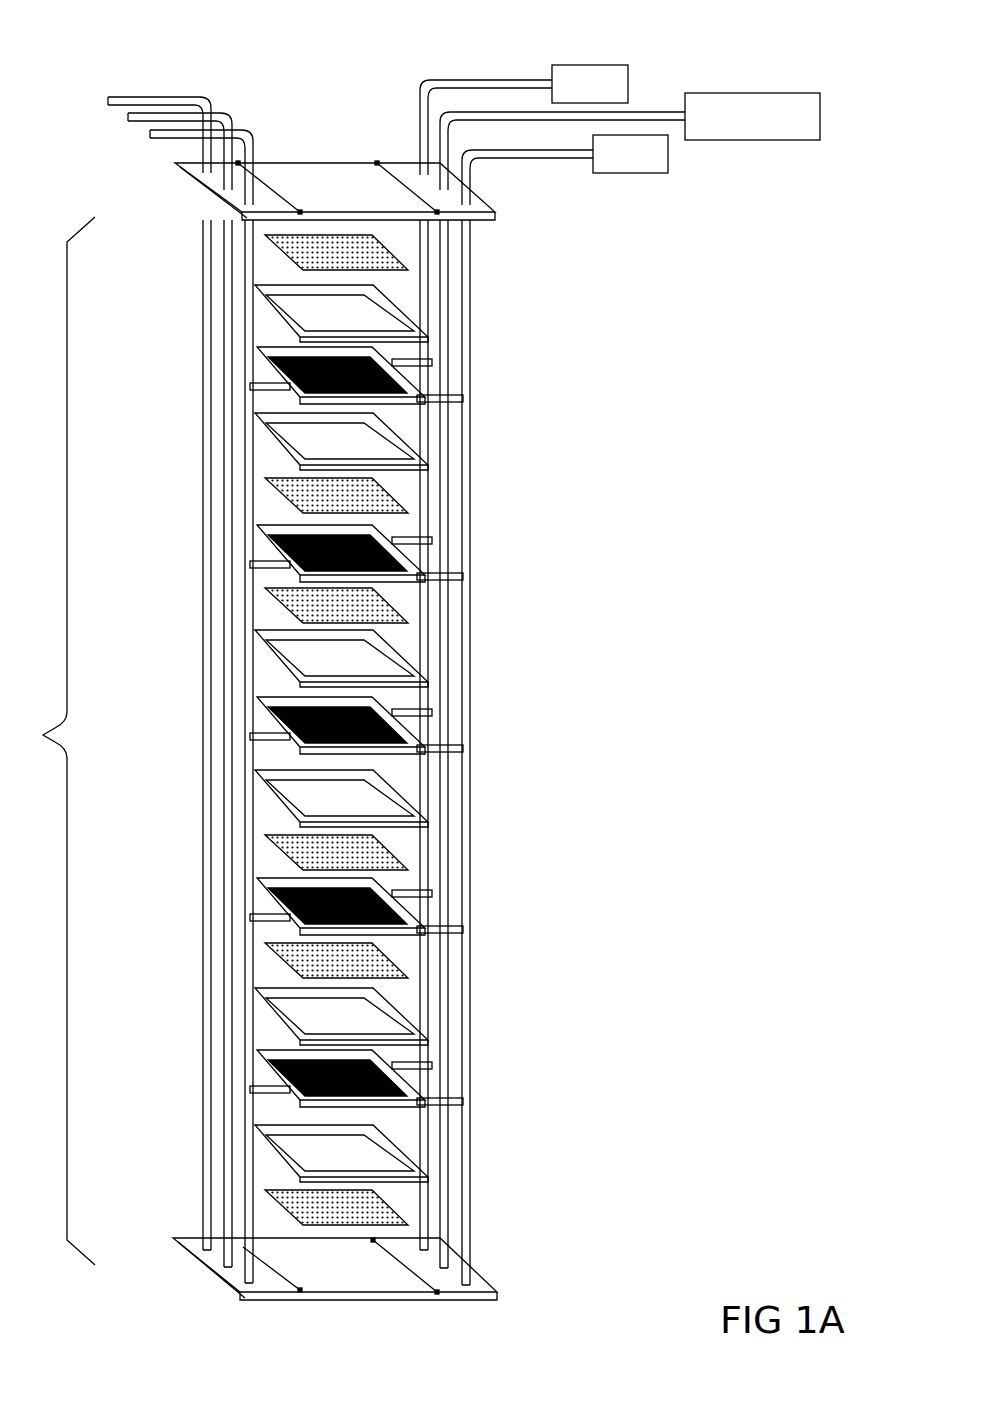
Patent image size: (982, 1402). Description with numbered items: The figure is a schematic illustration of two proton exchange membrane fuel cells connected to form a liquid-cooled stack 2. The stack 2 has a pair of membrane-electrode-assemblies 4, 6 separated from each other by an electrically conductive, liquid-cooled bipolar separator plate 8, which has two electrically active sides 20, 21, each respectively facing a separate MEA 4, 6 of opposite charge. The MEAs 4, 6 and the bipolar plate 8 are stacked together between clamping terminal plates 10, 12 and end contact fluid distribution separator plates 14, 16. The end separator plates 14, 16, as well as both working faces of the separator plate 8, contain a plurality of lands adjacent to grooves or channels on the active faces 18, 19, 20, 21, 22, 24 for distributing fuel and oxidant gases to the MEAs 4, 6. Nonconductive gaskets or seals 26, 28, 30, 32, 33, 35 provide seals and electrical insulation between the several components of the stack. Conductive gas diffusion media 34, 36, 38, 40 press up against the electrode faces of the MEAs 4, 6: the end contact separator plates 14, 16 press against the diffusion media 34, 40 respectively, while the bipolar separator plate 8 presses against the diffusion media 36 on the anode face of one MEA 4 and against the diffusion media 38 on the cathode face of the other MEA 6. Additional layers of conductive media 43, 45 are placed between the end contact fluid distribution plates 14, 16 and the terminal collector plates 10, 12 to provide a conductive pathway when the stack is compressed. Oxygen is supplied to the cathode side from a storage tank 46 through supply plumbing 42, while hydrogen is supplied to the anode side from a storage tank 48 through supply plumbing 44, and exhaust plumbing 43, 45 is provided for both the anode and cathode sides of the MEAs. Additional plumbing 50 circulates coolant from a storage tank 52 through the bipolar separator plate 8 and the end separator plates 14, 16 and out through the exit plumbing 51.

The stack 2 is at (56, 741).
The membrane-electrode-assembly 4 is at (262, 555).
The membrane-electrode-assembly 6 is at (422, 891).
The bipolar separator plate 8 is at (294, 737).
The clamping terminal plate 10 is at (363, 200).
The clamping terminal plate 12 is at (375, 1283).
The end contact fluid distribution separator plate 14 is at (340, 373).
The end contact fluid distribution separator plate 16 is at (342, 1115).
The active face 18 is at (418, 352).
The active face 19 is at (436, 415).
The active side 20 is at (266, 717).
The active side 21 is at (347, 801).
The active face 22 is at (300, 1139).
The active face 24 is at (424, 1078).
The gasket 26 is at (275, 440).
The gasket 28 is at (280, 655).
The gasket 30 is at (411, 812).
The gasket 32 is at (280, 1012).
The gasket 33 is at (395, 1142).
The gas diffusion media 34 is at (280, 490).
The gasket 35 is at (278, 305).
The gas diffusion media 36 is at (280, 603).
The gas diffusion media 38 is at (285, 843).
The gas diffusion media 40 is at (283, 955).
The supply plumbing 42 is at (422, 115).
The exhaust plumbing 43 is at (168, 97).
The supply plumbing 44 is at (465, 177).
The exhaust plumbing 45 is at (250, 142).
The storage tank 46 is at (613, 72).
The storage tank 48 is at (665, 173).
The coolant plumbing 50 is at (647, 117).
The exit plumbing 51 is at (212, 117).
The coolant storage tank 52 is at (733, 98).